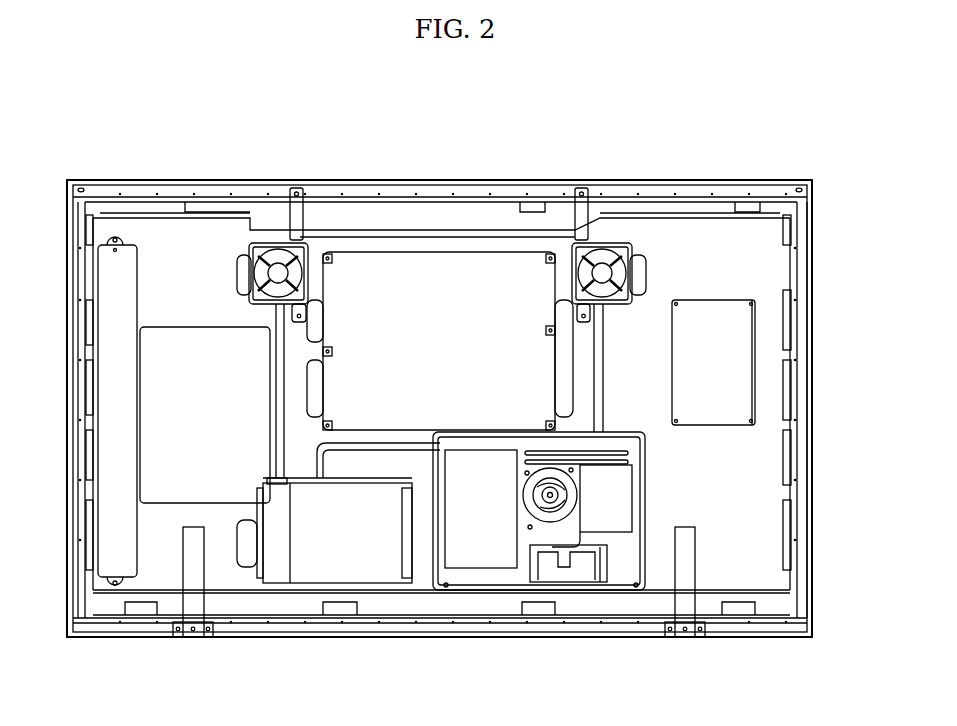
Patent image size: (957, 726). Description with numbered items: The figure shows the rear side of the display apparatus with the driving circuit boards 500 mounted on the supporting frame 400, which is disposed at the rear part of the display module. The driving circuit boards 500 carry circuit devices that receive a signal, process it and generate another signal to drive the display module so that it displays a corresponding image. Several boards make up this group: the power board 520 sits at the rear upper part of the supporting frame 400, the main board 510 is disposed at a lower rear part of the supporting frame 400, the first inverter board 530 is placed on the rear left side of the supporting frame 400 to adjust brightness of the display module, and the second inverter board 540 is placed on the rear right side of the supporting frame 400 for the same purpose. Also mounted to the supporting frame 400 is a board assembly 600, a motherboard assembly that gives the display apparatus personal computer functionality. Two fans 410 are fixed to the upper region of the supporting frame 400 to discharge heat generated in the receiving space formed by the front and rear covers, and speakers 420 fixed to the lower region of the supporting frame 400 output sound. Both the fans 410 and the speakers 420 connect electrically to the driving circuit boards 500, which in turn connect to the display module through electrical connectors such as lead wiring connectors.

The driving circuit boards 500 is at (427, 180).
The supporting frame 400 is at (763, 260).
The fan 410 is at (278, 272).
The speaker 420 is at (185, 600).
The main board 510 is at (329, 541).
The power board 520 is at (423, 351).
The first inverter board 530 is at (196, 415).
The second inverter board 540 is at (696, 357).
The board assembly 600 is at (533, 586).